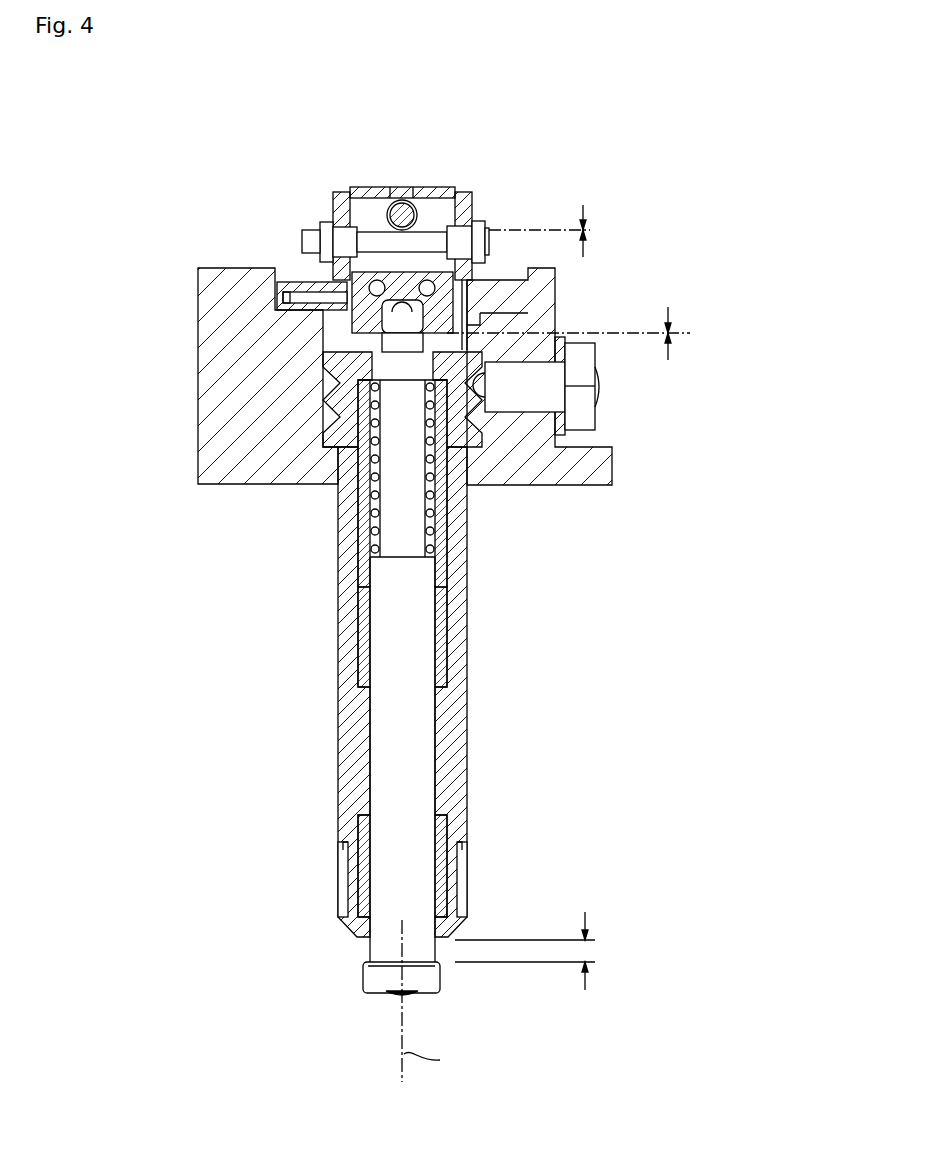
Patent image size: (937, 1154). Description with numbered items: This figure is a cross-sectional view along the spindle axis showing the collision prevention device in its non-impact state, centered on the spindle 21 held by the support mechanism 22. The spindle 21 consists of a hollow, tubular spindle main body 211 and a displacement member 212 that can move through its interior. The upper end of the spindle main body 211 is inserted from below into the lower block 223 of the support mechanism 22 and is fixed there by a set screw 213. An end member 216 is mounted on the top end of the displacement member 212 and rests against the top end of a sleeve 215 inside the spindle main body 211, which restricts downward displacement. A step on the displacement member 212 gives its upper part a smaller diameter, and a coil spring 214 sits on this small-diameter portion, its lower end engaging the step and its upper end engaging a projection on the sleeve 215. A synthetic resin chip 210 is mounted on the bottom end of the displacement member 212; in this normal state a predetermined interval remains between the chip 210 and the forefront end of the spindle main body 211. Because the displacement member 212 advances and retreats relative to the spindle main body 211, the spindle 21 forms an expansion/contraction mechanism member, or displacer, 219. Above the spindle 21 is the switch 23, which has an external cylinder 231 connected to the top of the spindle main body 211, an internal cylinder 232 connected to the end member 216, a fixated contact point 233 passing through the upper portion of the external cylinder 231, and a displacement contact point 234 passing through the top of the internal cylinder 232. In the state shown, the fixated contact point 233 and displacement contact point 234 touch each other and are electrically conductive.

The spindle 21 is at (416, 694).
The support mechanism 22 is at (356, 373).
The switch 23 is at (431, 217).
The chip 210 is at (362, 978).
The spindle main body 211 is at (468, 728).
The displacement member 212 is at (420, 782).
The set screw 213 is at (600, 388).
The coil spring 214 is at (430, 522).
The sleeve 215 is at (360, 345).
The end member 216 is at (347, 285).
The expansion/contraction mechanism member 219 is at (330, 1012).
The lower block 223 is at (198, 405).
The external cylinder 231 is at (342, 190).
The internal cylinder 232 is at (372, 187).
The fixated contact point 233 is at (307, 222).
The displacement contact point 234 is at (402, 200).